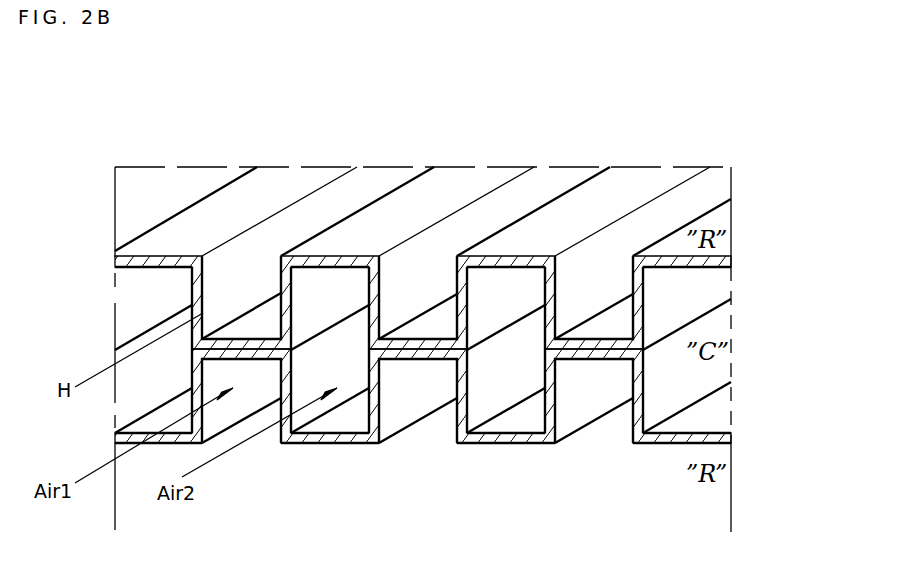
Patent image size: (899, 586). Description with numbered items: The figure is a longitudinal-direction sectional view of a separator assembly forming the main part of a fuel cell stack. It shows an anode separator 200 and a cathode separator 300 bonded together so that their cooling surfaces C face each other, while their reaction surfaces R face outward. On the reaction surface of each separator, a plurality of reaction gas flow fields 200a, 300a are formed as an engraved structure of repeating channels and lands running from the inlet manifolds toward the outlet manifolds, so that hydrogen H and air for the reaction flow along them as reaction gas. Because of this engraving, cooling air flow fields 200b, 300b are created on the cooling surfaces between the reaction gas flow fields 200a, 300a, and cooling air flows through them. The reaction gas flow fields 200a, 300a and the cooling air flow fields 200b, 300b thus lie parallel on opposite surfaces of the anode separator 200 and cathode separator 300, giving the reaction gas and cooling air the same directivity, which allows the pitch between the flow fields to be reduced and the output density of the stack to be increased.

The anode separator 200 is at (731, 258).
The cathode separator 300 is at (722, 438).
The reaction gas flow field 200a is at (607, 296).
The cooling air flow field 200b is at (517, 296).
The reaction gas flow field 300a is at (607, 388).
The cooling air flow field 300b is at (517, 388).